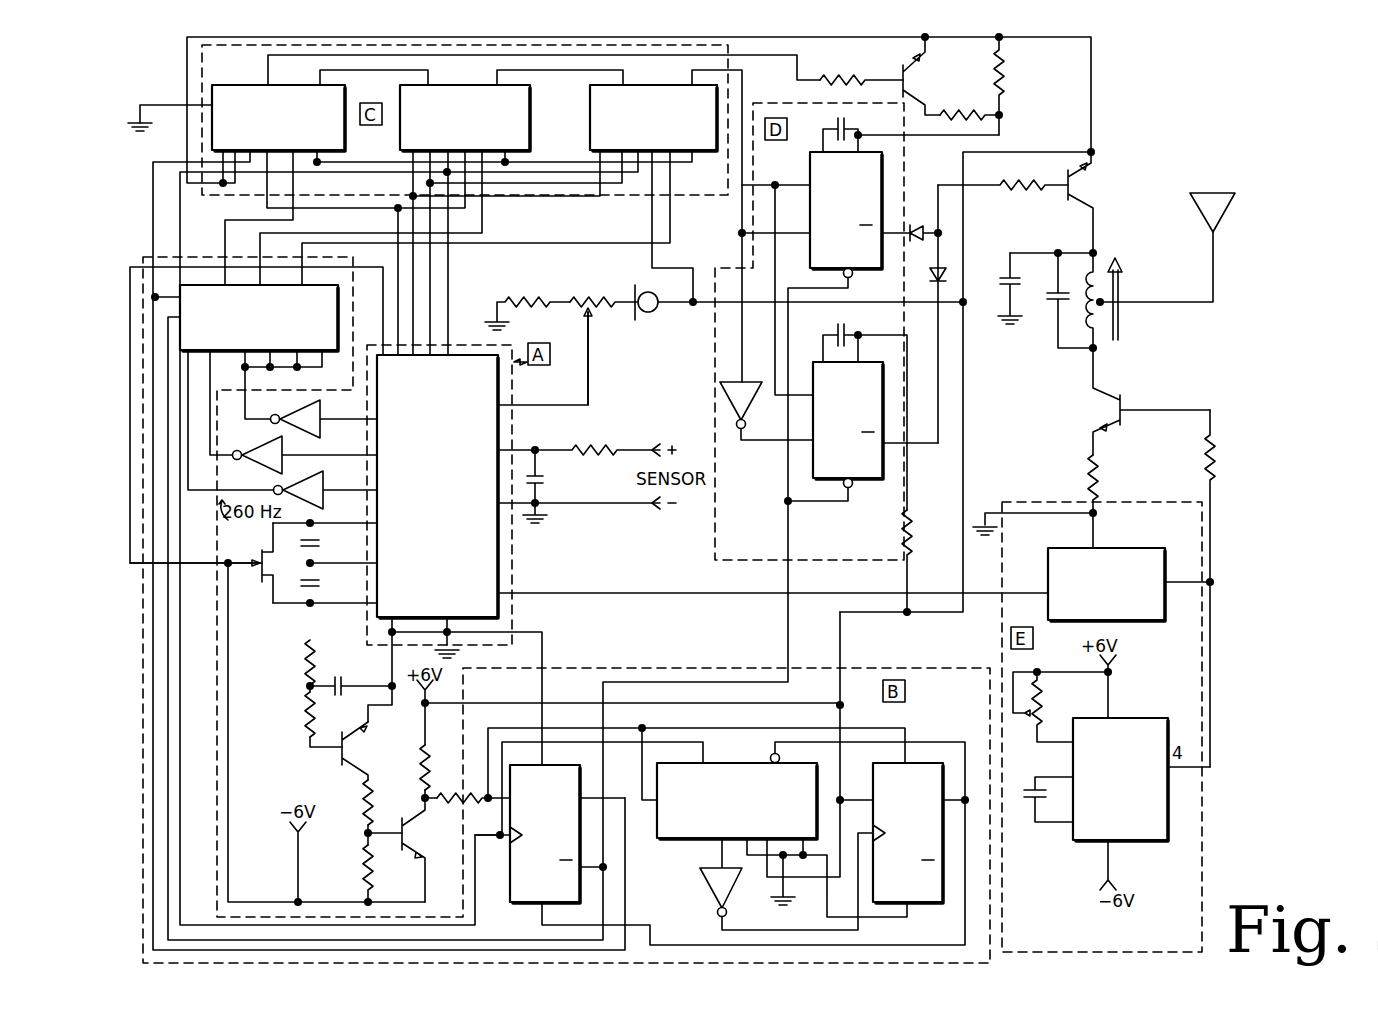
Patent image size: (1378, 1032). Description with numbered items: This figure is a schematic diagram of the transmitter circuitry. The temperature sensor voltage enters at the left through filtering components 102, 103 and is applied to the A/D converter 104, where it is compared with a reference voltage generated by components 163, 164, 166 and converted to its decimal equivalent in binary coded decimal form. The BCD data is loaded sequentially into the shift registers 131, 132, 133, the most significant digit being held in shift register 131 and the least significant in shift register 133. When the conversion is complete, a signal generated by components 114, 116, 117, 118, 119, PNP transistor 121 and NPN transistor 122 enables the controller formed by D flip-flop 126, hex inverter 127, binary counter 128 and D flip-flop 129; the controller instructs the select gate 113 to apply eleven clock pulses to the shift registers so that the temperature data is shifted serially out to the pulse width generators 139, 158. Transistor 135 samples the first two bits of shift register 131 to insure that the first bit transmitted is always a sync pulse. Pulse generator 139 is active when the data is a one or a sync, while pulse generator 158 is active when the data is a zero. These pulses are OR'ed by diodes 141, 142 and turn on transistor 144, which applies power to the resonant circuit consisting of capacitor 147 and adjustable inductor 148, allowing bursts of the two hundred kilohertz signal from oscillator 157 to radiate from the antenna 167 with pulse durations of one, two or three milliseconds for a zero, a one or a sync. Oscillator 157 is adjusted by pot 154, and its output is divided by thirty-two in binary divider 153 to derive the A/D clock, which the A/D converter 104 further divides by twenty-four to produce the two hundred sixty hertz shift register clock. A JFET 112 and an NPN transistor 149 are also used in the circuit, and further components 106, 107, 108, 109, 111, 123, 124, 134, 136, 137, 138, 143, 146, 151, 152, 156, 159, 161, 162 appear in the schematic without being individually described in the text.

The filtering component 102 is at (590, 446).
The filtering component 103 is at (548, 478).
The A/D converter 104 is at (498, 560).
The inverter 106 is at (322, 410).
The inverter 107 is at (244, 460).
The inverter 108 is at (324, 480).
The capacitor 109 is at (316, 544).
The capacitor 111 is at (319, 585).
The JFET 112 is at (254, 577).
The select gate 113 is at (188, 285).
The conversion-complete signal component 114 is at (308, 656).
The conversion-complete signal component 116 is at (308, 695).
The conversion-complete signal component 117 is at (343, 681).
The conversion-complete signal component 118 is at (364, 797).
The conversion-complete signal component 119 is at (372, 864).
The PNP transistor 121 is at (357, 745).
The NPN transistor 122 is at (407, 835).
The resistor 123 is at (422, 773).
The resistor 124 is at (458, 794).
The D flip-flop 126 is at (586, 764).
The hex inverter 127 is at (700, 884).
The binary counter 128 is at (740, 762).
The D flip-flop 129 is at (882, 764).
The shift register 131 is at (254, 82).
The shift register 132 is at (474, 82).
The shift register 133 is at (662, 88).
The resistor 134 is at (861, 68).
The PNP transistor 135 is at (910, 81).
The resistor 136 is at (970, 110).
The resistor 137 is at (1004, 70).
The capacitor 138 is at (855, 119).
The pulse width generator 139 is at (810, 172).
The diode 141 is at (913, 220).
The diode 142 is at (931, 278).
The resistor 143 is at (1003, 196).
The PNP transistor 144 is at (1078, 186).
The capacitor 146 is at (998, 270).
The capacitor 147 is at (1054, 315).
The adjustable inductor 148 is at (1107, 338).
The NPN transistor 149 is at (1112, 410).
The resistor 151 is at (1100, 471).
The resistor 152 is at (1216, 473).
The binary divider 153 is at (1146, 548).
The pot 154 is at (1043, 693).
The timing capacitor 156 is at (1036, 812).
The oscillator 157 is at (1152, 718).
The pulse width generator 158 is at (860, 485).
The inverter 159 is at (747, 414).
The flip-flop 161 is at (846, 326).
The resistor 162 is at (914, 526).
The reference voltage component 163 is at (648, 318).
The reference voltage component 164 is at (586, 298).
The reference voltage component 166 is at (536, 298).
The antenna 167 is at (1226, 237).